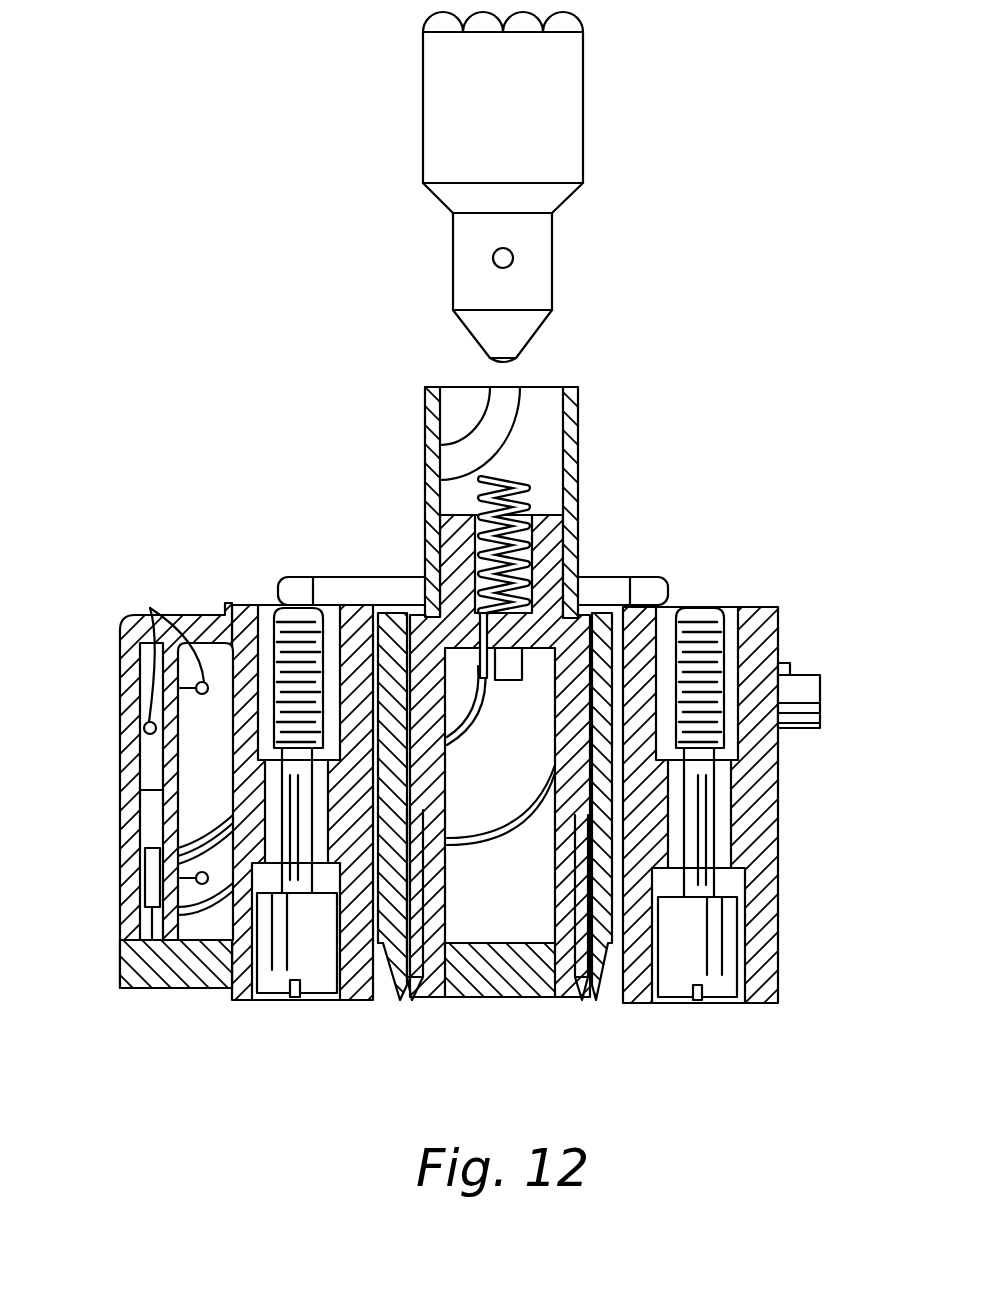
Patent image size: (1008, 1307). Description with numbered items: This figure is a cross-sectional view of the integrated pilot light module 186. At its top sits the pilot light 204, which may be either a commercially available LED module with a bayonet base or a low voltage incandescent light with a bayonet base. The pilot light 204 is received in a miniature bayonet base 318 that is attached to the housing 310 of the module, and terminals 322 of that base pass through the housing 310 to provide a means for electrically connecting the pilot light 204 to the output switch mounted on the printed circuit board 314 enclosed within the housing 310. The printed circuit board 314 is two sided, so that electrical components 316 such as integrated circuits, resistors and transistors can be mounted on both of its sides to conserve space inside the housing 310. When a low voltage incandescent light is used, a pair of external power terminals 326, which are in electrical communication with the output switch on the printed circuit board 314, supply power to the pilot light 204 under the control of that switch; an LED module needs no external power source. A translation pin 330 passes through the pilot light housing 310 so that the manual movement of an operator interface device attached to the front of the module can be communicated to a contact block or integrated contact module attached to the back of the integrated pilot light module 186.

The pilot light 204 is at (545, 120).
The integrated pilot light module 186 is at (475, 723).
The miniature bayonet base 318 is at (580, 456).
The housing 310 is at (778, 852).
The printed circuit board 314 is at (126, 792).
The electrical components 316 is at (150, 608).
The terminals 322 is at (505, 668).
The external power terminals 326 is at (822, 712).
The translation pin 330 is at (597, 1003).